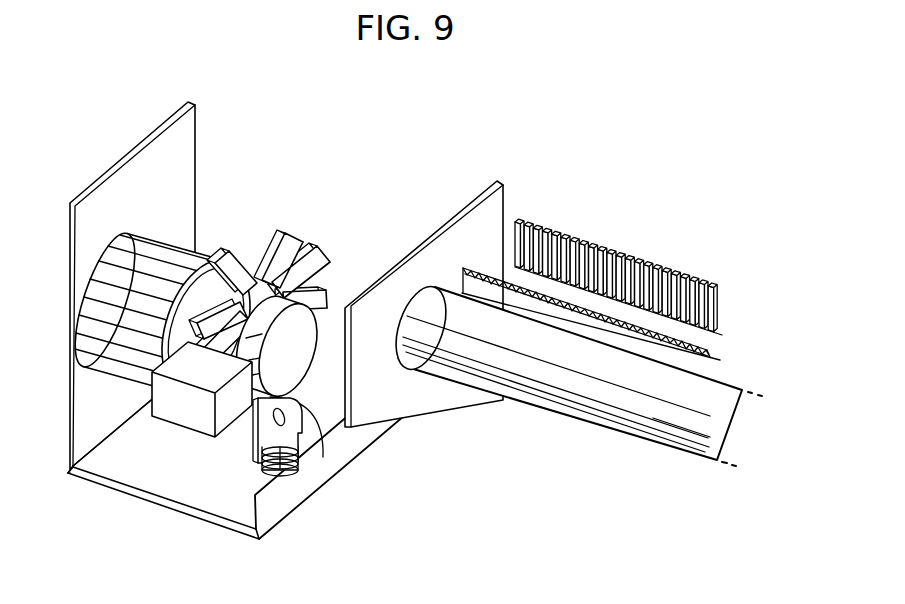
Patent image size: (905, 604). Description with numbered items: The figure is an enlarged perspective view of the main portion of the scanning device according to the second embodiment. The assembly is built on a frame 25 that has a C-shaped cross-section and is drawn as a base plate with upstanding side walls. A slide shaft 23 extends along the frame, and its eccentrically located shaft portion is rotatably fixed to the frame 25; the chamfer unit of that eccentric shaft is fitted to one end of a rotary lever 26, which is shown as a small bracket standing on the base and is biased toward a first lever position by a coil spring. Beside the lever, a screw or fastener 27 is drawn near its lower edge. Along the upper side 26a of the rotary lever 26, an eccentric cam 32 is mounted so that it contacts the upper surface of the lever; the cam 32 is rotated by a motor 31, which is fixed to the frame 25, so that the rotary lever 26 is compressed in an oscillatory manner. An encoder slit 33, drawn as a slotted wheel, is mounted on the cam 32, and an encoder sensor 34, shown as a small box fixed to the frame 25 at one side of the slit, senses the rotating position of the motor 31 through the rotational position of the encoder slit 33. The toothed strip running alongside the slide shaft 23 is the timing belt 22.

The timing belt 22 is at (592, 245).
The slide shaft 23 is at (588, 411).
The frame 25 is at (228, 500).
The rotary lever 26 is at (350, 450).
The upper side of rotary lever 26a is at (283, 403).
The screw 27 is at (290, 460).
The motor 31 is at (165, 235).
The eccentric cam 32 is at (307, 320).
The encoder slit 33 is at (282, 243).
The encoder sensor 34 is at (182, 413).